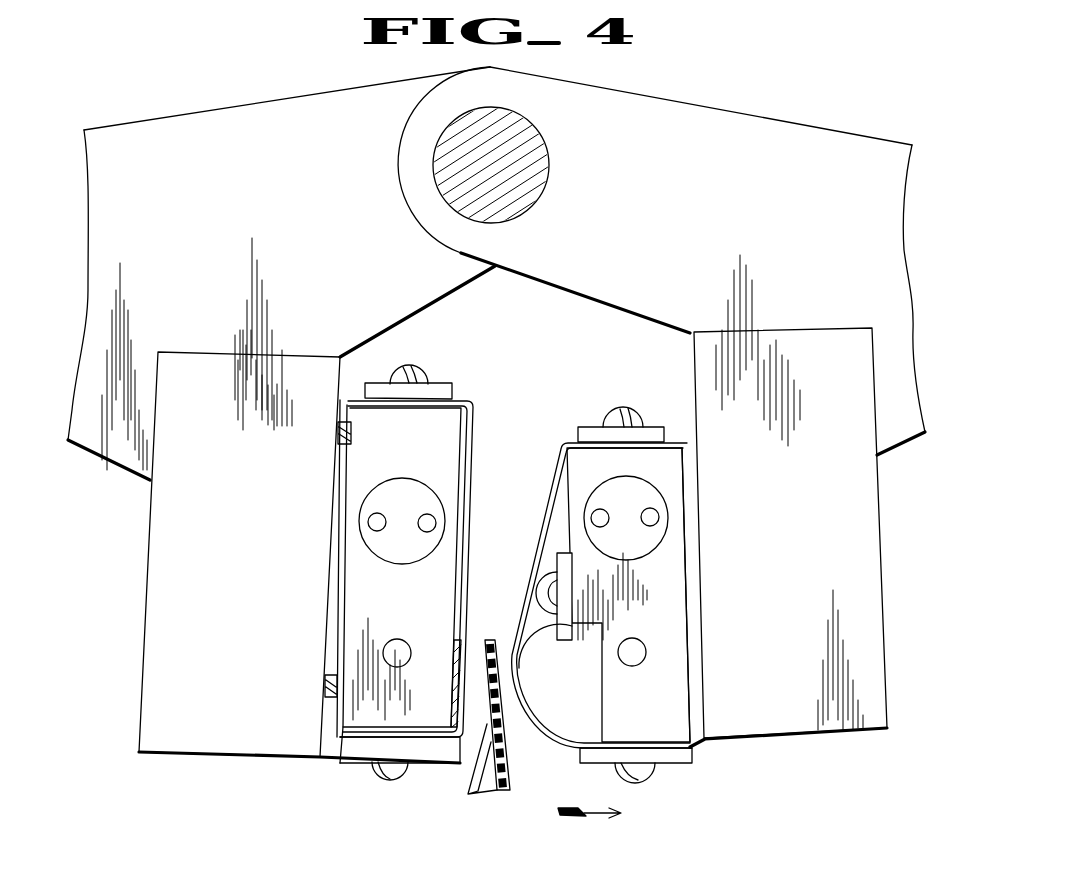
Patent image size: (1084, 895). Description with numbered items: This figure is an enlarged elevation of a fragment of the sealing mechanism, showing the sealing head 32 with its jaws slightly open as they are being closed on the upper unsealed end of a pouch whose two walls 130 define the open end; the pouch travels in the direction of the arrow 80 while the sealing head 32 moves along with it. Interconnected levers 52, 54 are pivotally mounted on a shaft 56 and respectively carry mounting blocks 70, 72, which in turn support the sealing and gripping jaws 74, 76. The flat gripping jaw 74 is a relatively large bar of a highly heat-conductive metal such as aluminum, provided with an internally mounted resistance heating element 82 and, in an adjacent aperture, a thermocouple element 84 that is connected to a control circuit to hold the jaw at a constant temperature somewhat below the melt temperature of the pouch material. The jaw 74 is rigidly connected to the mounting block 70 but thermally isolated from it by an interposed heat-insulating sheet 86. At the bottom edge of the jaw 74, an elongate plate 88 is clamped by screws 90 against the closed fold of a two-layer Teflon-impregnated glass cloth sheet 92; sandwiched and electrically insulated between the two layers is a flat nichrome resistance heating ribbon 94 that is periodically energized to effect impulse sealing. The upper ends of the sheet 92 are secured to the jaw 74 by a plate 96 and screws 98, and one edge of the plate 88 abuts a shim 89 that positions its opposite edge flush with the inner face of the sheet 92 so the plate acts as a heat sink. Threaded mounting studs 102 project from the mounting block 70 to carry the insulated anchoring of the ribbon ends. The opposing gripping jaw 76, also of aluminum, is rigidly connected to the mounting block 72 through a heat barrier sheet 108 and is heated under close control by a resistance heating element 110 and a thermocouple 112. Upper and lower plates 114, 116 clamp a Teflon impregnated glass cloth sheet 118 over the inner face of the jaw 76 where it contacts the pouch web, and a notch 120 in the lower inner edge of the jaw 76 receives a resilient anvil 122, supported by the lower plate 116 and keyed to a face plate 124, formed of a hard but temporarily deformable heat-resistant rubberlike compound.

The sealing head 32 is at (143, 623).
The lever 52 is at (280, 161).
The lever 54 is at (714, 189).
The shaft 56 is at (489, 109).
The mounting block 70 is at (218, 603).
The mounting block 72 is at (813, 551).
The gripping jaw 74 is at (362, 561).
The gripping jaw 76 is at (678, 572).
The arrow 80 is at (598, 815).
The resistance heating element 82 is at (382, 486).
The thermocouple element 84 is at (396, 640).
The heat-insulating sheet 86 is at (340, 538).
The elongate plate 88 is at (362, 754).
The shim 89 is at (338, 760).
The screws 90 is at (405, 770).
The Teflon-impregnated glass cloth sheet 92 is at (478, 546).
The resistance heating ribbon 94 is at (457, 679).
The plate 96 is at (438, 384).
The screws 98 is at (409, 367).
The threaded mounting studs 102 is at (351, 425).
The heat barrier sheet 108 is at (690, 535).
The resistance heating element 110 is at (668, 511).
The thermocouple 112 is at (628, 637).
The upper plate 114 is at (652, 423).
The lower plate 116 is at (696, 764).
The Teflon impregnated glass cloth sheet 118 is at (560, 458).
The notch 120 is at (598, 686).
The resilient anvil 122 is at (580, 703).
The face plate 124 is at (557, 566).
The walls 130 is at (485, 806).